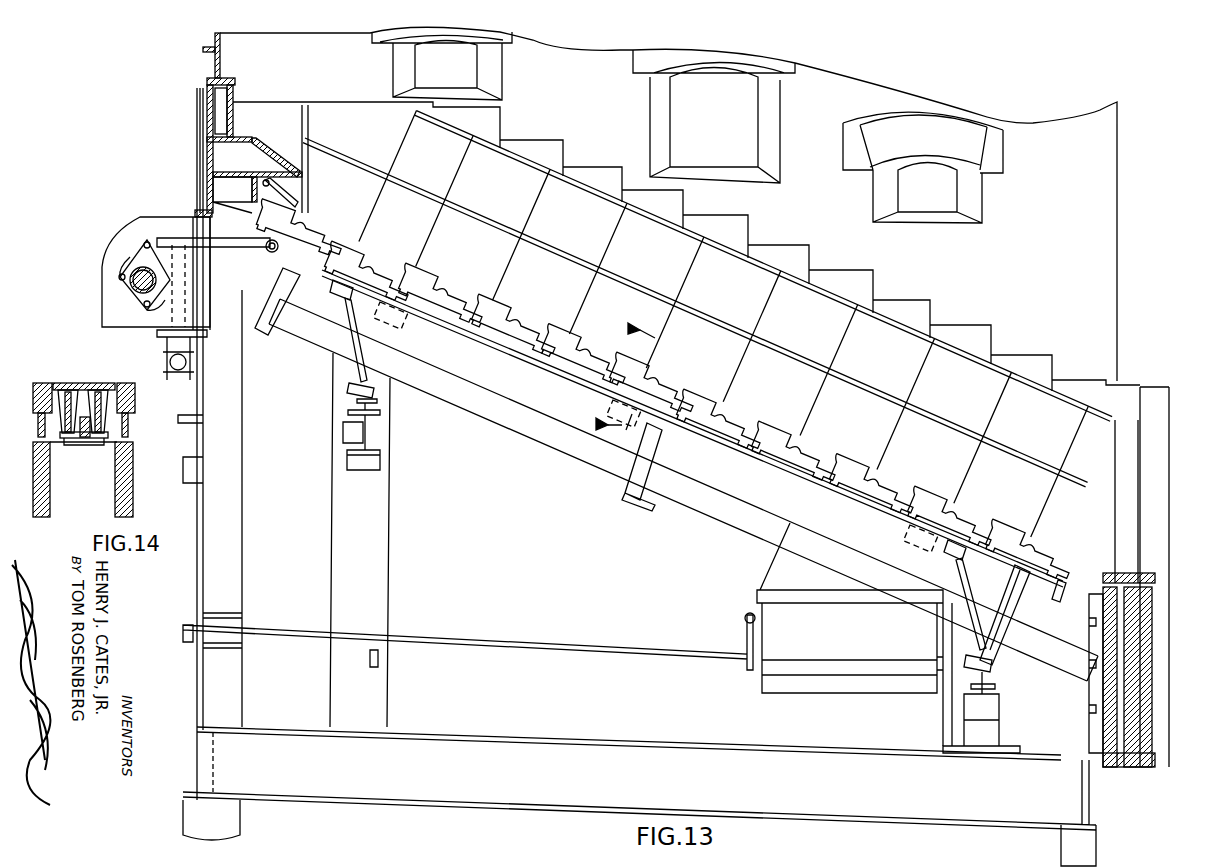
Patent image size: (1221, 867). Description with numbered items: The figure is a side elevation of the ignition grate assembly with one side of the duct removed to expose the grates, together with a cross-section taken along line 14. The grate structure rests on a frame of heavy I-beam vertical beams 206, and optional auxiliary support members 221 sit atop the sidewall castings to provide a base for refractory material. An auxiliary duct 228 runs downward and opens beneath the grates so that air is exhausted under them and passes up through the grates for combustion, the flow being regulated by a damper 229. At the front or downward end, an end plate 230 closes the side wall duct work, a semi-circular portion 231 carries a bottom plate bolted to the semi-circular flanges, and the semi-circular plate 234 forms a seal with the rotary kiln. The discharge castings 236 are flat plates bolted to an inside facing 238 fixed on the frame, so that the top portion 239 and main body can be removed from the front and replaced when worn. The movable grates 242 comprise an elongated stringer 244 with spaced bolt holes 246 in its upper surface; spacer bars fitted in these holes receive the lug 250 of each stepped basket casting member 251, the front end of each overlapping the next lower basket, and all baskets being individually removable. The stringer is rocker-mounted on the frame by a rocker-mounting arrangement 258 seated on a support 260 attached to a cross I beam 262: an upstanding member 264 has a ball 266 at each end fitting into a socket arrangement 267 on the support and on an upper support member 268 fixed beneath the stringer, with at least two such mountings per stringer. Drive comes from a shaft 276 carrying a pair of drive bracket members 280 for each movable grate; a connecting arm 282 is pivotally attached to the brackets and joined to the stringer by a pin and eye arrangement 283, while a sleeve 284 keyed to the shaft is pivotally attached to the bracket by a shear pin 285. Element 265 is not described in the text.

In FIG. 13, the section line 14— 14 is at (613, 374).
In FIG. 13, the vertical beams 206 is at (380, 549).
In FIG. 13, the auxiliary support members 221 is at (752, 232).
In FIG. 13, the auxiliary duct 228 is at (803, 588).
In FIG. 13, the damper 229 is at (770, 668).
In FIG. 13, the end plate 230 is at (1104, 492).
In FIG. 13, the semi-circular portion 231 is at (1118, 762).
In FIG. 13, the semi-circular plate 234 is at (1163, 540).
In FIG. 13, the discharge castings 236 is at (1152, 645).
In FIG. 13, the inside facing 238 is at (1103, 718).
In FIG. 13, the top portion 239 is at (1156, 578).
In FIG. 13, the movable grates 242 is at (375, 238).
In FIG. 13, the stringer 244 is at (745, 494).
In FIG. 14, the stringer 244 is at (48, 470).
In FIG. 13, the bolt holes 246 is at (640, 372).
In FIG. 13, the lug 250 is at (490, 297).
In FIG. 14, the lug 250 is at (100, 443).
In FIG. 13, the basket casting member 251 is at (435, 283).
In FIG. 14, the basket casting member 251 is at (108, 422).
In FIG. 13, the rocker-mounting arrangement 258 is at (372, 372).
In FIG. 13, the support 260 is at (380, 410).
In FIG. 13, the cross I beam 262 is at (365, 430).
In FIG. 13, the upstanding member 264 is at (352, 358).
In FIG. 13, the plate 265 is at (290, 305).
In FIG. 13, the ball 266 is at (350, 390).
In FIG. 13, the socket arrangement 267 is at (379, 255).
In FIG. 13, the upper support member 268 is at (336, 276).
In FIG. 13, the shaft 276 is at (110, 296).
In FIG. 13, the drive bracket members 280 is at (116, 264).
In FIG. 13, the connecting arm 282 is at (205, 247).
In FIG. 13, the pin and eye arrangement 283 is at (305, 222).
In FIG. 13, the sleeve 284 is at (110, 312).
In FIG. 13, the shear pin 285 is at (119, 283).